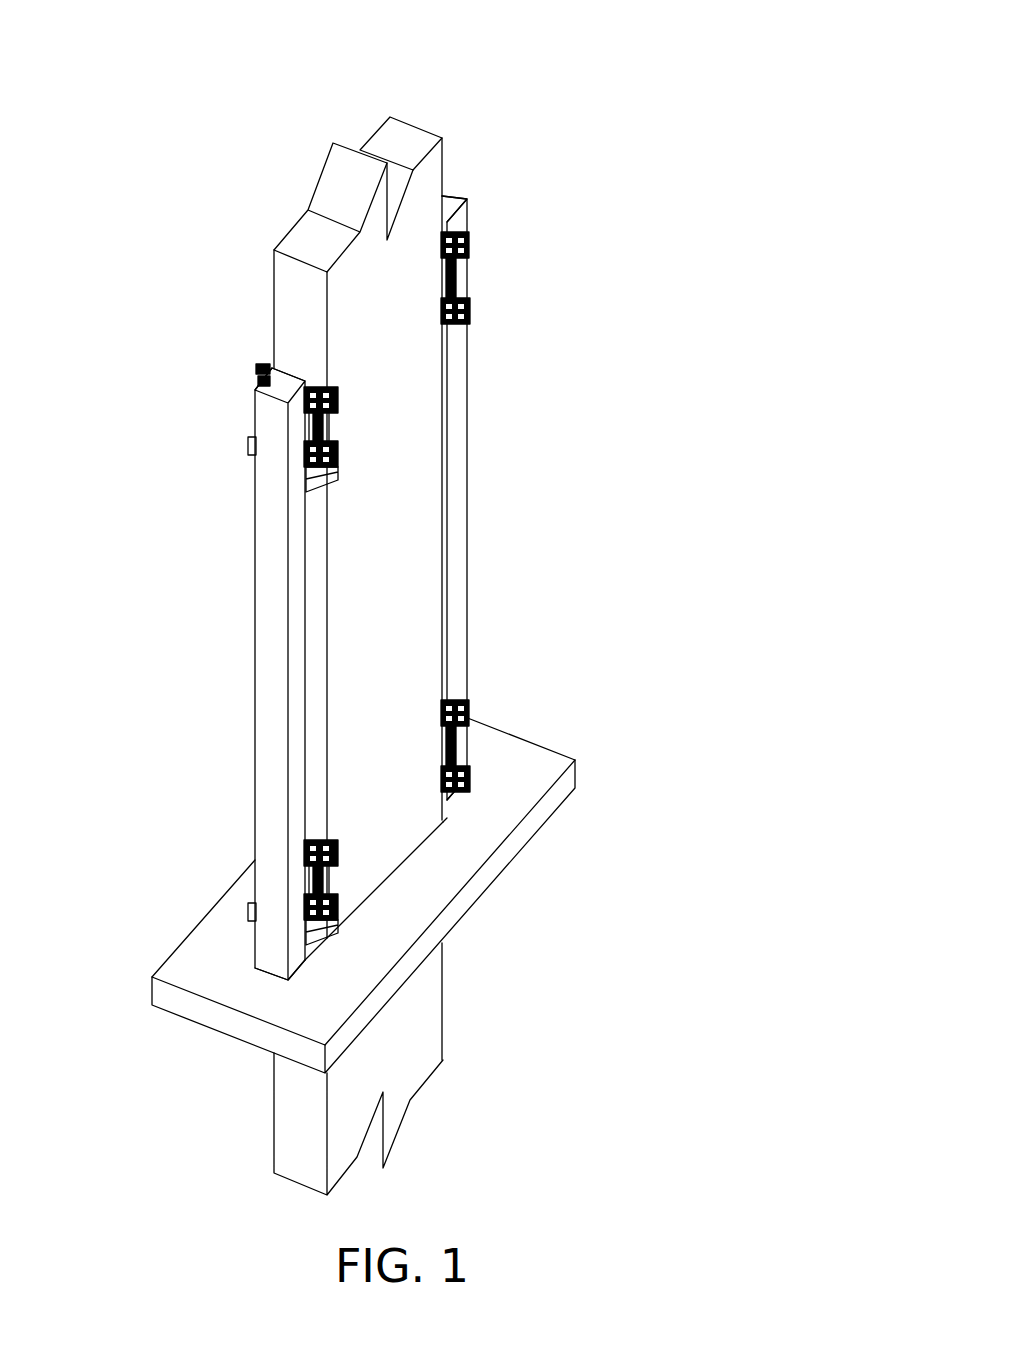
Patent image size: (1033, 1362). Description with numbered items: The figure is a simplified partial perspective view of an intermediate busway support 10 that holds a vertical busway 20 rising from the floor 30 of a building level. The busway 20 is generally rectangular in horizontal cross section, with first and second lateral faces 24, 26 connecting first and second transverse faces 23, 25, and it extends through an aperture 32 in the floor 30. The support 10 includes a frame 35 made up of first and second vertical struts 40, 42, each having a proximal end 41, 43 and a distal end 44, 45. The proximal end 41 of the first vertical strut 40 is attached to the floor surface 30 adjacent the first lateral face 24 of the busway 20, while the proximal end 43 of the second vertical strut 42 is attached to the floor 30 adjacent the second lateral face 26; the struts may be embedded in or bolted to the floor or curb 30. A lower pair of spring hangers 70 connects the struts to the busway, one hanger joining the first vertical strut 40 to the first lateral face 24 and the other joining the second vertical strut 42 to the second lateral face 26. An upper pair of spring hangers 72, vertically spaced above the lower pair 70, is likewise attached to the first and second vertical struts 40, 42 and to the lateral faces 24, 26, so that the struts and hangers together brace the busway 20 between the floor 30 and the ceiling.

The intermediate busway support 10 is at (288, 68).
The vertical busway 20 is at (413, 605).
The first transverse face 23 is at (430, 195).
The first lateral face 24 is at (300, 320).
The second transverse face 25 is at (297, 222).
The second lateral face 26 is at (412, 122).
The floor 30 is at (405, 917).
The aperture 32 is at (450, 815).
The frame 35 is at (620, 218).
The first vertical strut 40 is at (268, 718).
The proximal end 41 is at (270, 958).
The second vertical strut 42 is at (457, 515).
The proximal end 43 is at (453, 787).
The distal end 44 is at (263, 410).
The distal end 45 is at (468, 228).
The lower pair of spring hangers 70 is at (328, 925).
The upper pair of spring hangers 72 is at (262, 372).